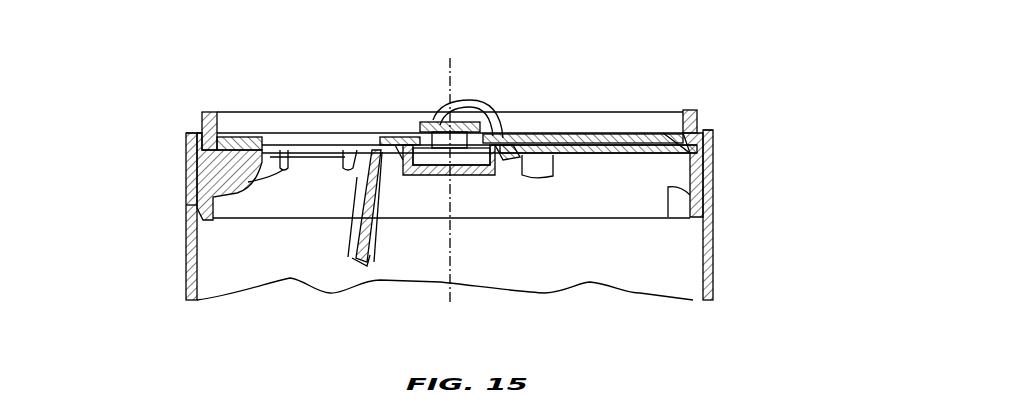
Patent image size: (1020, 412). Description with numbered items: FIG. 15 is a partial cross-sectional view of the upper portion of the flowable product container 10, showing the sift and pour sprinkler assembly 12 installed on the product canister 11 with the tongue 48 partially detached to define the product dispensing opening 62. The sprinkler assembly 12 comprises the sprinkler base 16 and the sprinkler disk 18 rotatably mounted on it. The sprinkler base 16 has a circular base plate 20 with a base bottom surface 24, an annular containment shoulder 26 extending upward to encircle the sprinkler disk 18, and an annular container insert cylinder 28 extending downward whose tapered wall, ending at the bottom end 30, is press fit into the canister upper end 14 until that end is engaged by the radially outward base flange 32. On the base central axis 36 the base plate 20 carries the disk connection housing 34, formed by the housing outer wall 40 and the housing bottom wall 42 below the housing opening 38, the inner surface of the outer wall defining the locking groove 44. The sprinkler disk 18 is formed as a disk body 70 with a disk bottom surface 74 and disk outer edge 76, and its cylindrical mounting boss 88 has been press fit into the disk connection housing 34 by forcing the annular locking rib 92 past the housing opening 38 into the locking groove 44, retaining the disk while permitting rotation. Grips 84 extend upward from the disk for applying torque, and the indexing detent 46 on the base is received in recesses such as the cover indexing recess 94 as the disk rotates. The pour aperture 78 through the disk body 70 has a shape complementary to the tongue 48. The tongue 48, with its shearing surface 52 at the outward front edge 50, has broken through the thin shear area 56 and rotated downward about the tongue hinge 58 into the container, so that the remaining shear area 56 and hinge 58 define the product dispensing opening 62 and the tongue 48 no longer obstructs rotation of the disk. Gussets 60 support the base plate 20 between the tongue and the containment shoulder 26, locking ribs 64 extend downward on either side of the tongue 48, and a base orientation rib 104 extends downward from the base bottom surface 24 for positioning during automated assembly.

The flowable product container 10 is at (137, 117).
The product canister 11 is at (186, 212).
The sift and pour sprinkler assembly 12 is at (707, 78).
The canister upper end 14 is at (713, 150).
The sprinkler base 16 is at (700, 215).
The sprinkler disk 18 is at (577, 118).
The base plate 20 is at (642, 115).
The base bottom surface 24 is at (613, 157).
The containment shoulder 26 is at (698, 108).
The container insert cylinder 28 is at (700, 200).
The bottom end 30 is at (663, 157).
The base flange 32 is at (716, 135).
The disk connection housing 34 is at (508, 158).
The base central axis 36 is at (448, 62).
The housing opening 38 is at (412, 128).
The housing outer wall 40 is at (384, 177).
The housing bottom wall 42 is at (438, 177).
The locking groove 44 is at (493, 112).
The indexing detent 46 is at (553, 118).
The tongue 48 is at (353, 228).
The outward front edge 50 is at (367, 278).
The shearing surface 52 is at (356, 272).
The shear area 56 is at (262, 133).
The tongue hinge 58 is at (365, 130).
The gussets 60 is at (290, 150).
The product dispensing opening 62 is at (274, 145).
The locking ribs 64 is at (360, 163).
The disk body 70 is at (600, 125).
The disk bottom surface 74 is at (690, 173).
The disk outer edge 76 is at (700, 130).
The pour aperture 78 is at (374, 135).
The grips 84 is at (460, 108).
The mounting boss 88 is at (418, 177).
The locking rib 92 is at (527, 157).
The cover indexing recess 94 is at (527, 120).
The base orientation rib 104 is at (553, 157).